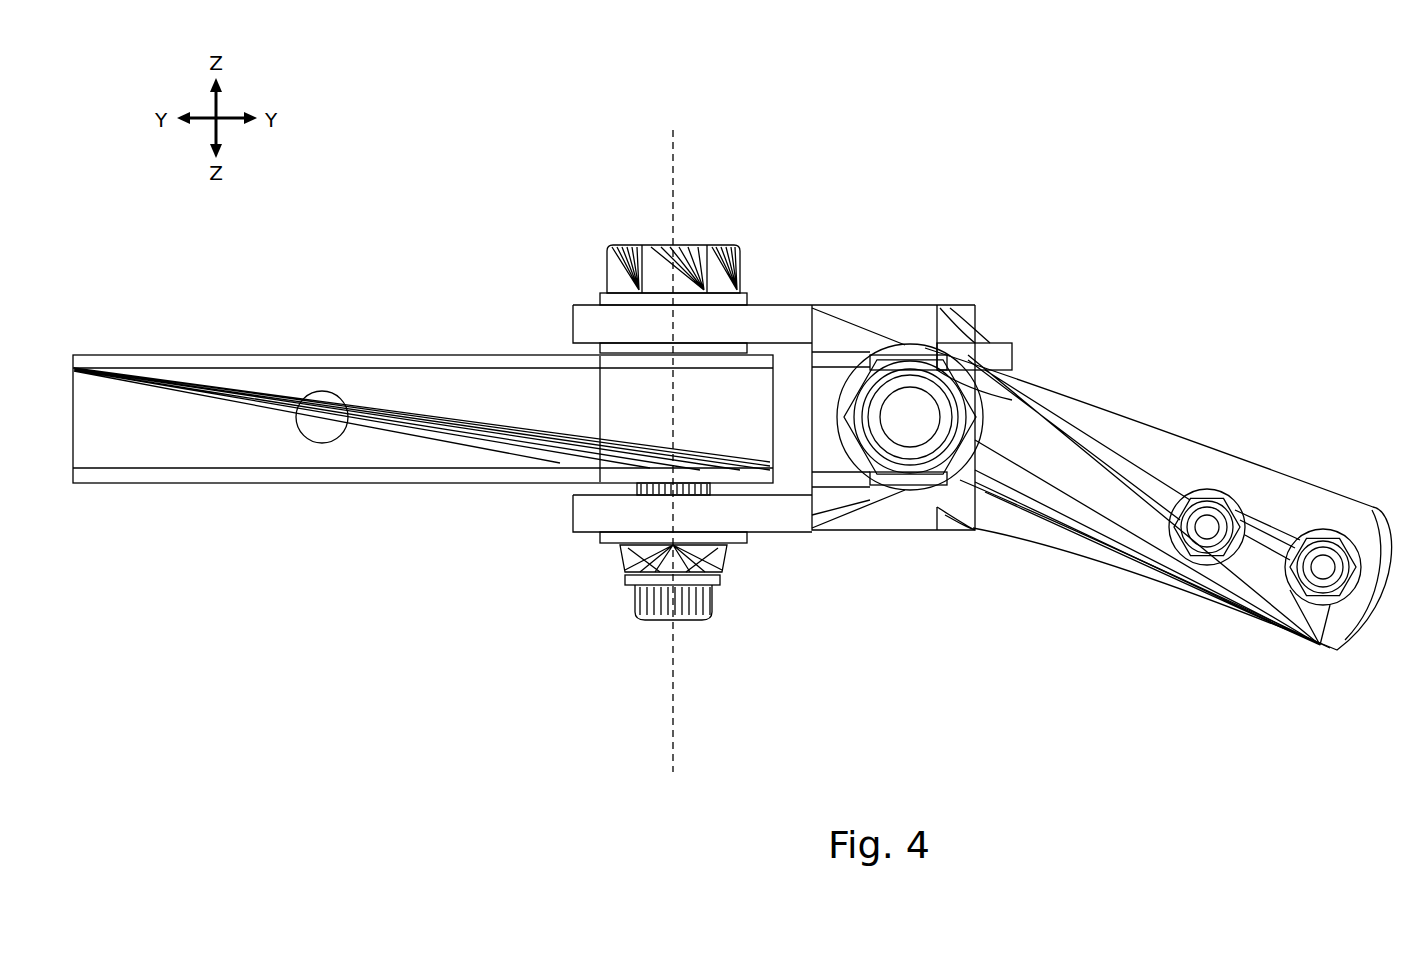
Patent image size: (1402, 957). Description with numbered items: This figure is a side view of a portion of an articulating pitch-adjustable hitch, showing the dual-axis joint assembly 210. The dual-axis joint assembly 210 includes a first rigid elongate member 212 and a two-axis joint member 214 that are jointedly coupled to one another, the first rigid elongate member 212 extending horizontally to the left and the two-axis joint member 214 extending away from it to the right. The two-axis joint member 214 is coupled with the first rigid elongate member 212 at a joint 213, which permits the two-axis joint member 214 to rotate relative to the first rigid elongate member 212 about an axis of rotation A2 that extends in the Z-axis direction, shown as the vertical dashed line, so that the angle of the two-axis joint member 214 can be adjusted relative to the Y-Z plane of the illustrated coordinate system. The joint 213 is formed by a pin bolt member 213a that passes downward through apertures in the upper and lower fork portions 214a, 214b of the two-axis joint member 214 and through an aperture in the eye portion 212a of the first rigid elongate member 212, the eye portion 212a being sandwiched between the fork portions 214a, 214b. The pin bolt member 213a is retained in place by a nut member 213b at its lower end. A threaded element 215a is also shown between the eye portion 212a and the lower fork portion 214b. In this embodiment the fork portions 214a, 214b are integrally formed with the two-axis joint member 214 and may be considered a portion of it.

The dual-axis joint assembly 210 is at (1171, 118).
The first rigid elongate member 212 is at (347, 355).
The eye portion 212a is at (615, 405).
The joint 213 is at (596, 243).
The pin bolt member 213a is at (698, 245).
The nut member 213b is at (698, 622).
The two-axis joint member 214 is at (784, 305).
The fork portion 214a is at (593, 320).
The fork portion 214b is at (602, 517).
The threaded spacer 215a is at (633, 487).
The axis of rotation A2 is at (672, 725).